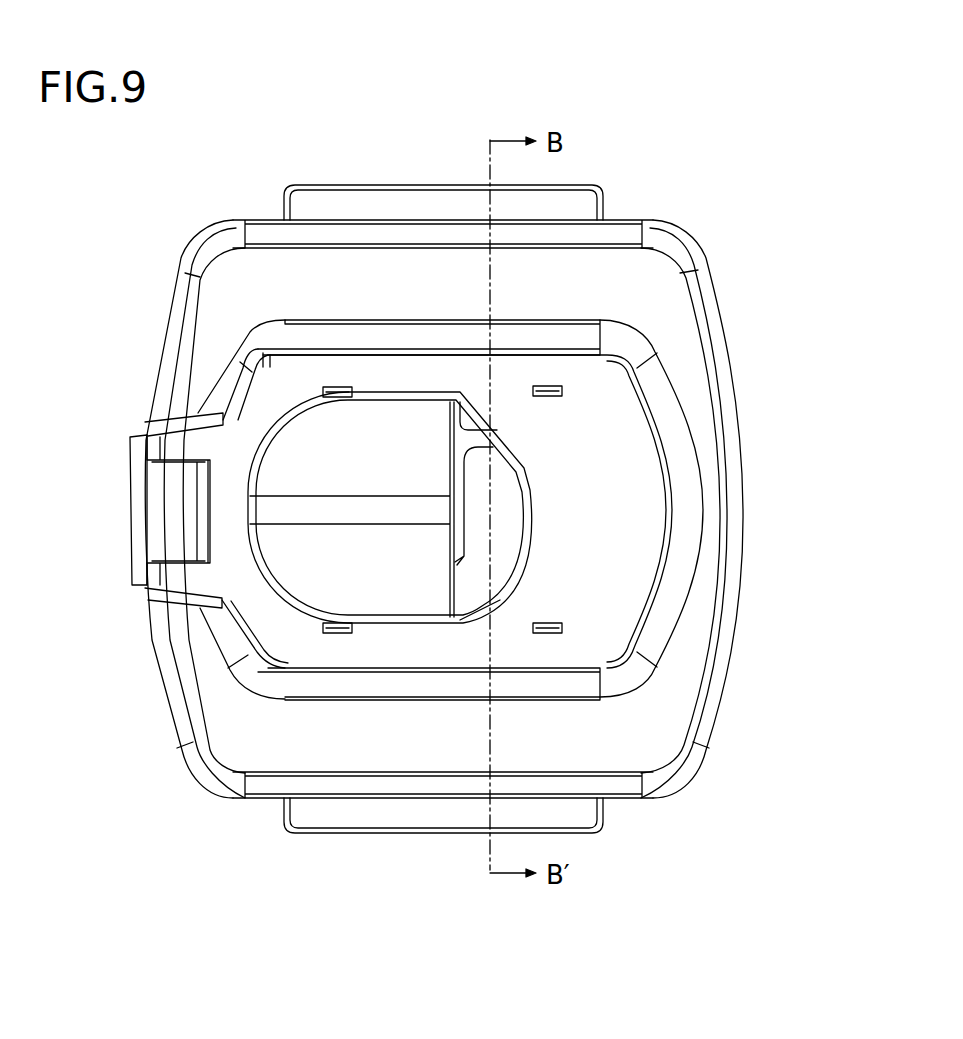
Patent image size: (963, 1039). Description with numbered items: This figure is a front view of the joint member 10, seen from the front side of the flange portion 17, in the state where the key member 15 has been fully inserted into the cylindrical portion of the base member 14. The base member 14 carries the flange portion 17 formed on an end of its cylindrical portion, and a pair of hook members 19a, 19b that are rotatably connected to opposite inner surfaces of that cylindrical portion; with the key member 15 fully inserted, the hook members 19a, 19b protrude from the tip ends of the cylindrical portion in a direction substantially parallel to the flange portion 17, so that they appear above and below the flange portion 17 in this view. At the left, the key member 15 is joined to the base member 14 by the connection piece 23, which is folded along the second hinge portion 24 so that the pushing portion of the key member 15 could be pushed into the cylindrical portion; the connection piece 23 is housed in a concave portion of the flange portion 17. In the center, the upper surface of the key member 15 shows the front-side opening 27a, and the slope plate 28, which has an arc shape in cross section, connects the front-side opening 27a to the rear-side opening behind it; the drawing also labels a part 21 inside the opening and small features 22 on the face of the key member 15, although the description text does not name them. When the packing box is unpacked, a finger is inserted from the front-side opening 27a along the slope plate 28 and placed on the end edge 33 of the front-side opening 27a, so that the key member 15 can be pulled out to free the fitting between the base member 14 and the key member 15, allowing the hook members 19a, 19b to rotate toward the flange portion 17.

The joint member 10 is at (741, 280).
The base member 14 is at (738, 620).
The key member 15 is at (368, 650).
The flange portion 17 is at (228, 283).
The hook member 19a is at (325, 815).
The hook member 19b is at (323, 200).
The contact holding portion 21 is at (508, 547).
The engaging hole 22 is at (478, 420).
The connection piece 23 is at (175, 523).
The second hinge portion 24 is at (128, 466).
The front-side opening 27a is at (420, 620).
The slope plate 28 is at (313, 455).
The end edge 33 is at (528, 487).